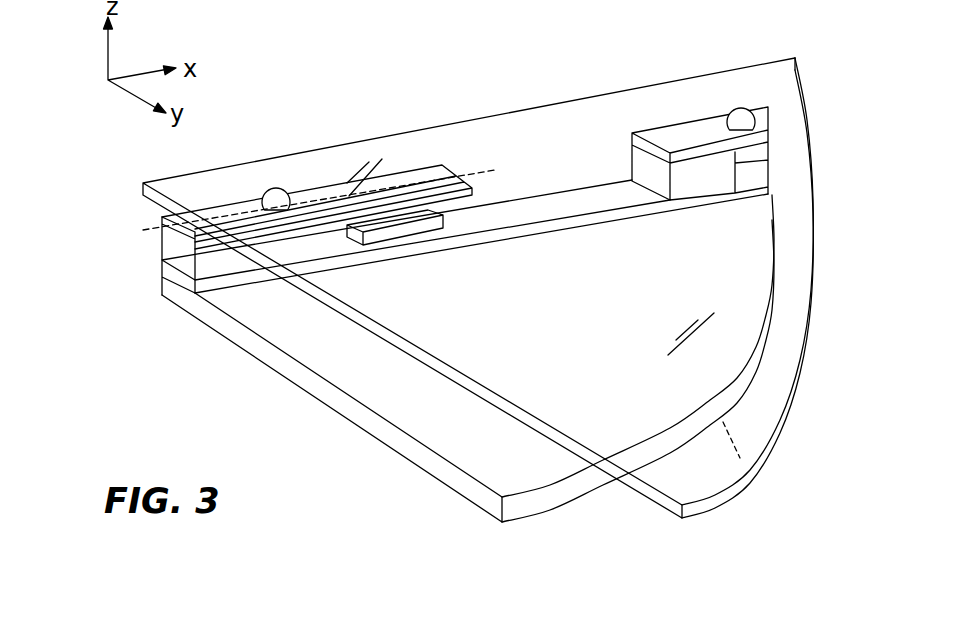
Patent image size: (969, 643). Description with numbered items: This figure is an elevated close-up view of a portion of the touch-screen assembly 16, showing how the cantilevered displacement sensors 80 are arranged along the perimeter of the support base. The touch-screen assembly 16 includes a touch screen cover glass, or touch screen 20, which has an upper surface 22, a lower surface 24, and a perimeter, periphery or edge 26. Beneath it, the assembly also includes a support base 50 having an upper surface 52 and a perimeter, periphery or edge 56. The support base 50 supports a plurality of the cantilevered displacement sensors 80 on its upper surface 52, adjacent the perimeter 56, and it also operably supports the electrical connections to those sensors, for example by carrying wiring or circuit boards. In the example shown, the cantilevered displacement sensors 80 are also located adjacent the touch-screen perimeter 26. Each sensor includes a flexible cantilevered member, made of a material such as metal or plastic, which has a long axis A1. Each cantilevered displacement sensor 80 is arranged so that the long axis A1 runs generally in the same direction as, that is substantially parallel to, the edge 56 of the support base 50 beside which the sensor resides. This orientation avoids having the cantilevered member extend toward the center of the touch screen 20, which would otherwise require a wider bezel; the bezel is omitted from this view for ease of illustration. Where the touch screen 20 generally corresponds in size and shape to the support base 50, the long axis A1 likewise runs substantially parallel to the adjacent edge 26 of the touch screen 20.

The touch-screen assembly 16 is at (705, 52).
The touch screen cover glass 20 is at (468, 142).
The upper surface 22 is at (615, 108).
The lower surface 24 is at (743, 462).
The perimeter 26 is at (548, 99).
The support base 50 is at (200, 348).
The upper surface 52 is at (337, 376).
The perimeter 56 is at (578, 190).
The cantilevered displacement sensor 80 is at (778, 147).
The long axis A1 is at (495, 171).